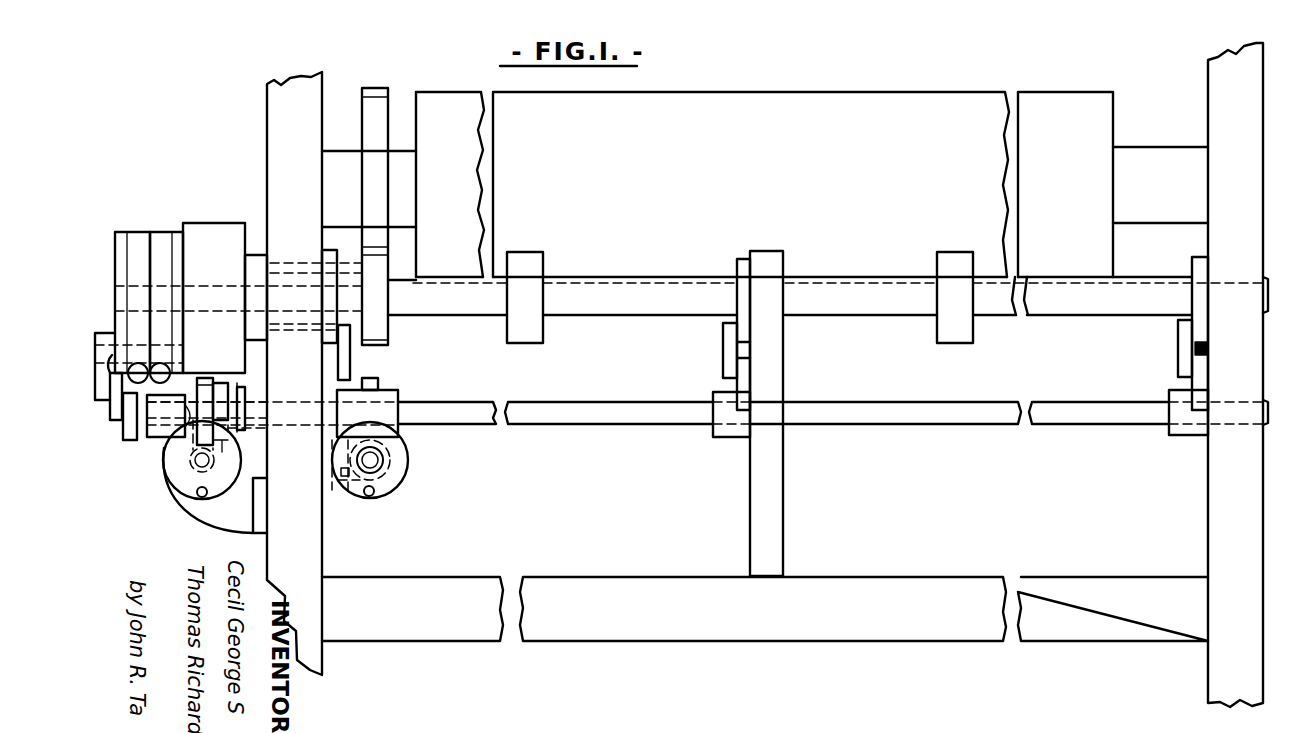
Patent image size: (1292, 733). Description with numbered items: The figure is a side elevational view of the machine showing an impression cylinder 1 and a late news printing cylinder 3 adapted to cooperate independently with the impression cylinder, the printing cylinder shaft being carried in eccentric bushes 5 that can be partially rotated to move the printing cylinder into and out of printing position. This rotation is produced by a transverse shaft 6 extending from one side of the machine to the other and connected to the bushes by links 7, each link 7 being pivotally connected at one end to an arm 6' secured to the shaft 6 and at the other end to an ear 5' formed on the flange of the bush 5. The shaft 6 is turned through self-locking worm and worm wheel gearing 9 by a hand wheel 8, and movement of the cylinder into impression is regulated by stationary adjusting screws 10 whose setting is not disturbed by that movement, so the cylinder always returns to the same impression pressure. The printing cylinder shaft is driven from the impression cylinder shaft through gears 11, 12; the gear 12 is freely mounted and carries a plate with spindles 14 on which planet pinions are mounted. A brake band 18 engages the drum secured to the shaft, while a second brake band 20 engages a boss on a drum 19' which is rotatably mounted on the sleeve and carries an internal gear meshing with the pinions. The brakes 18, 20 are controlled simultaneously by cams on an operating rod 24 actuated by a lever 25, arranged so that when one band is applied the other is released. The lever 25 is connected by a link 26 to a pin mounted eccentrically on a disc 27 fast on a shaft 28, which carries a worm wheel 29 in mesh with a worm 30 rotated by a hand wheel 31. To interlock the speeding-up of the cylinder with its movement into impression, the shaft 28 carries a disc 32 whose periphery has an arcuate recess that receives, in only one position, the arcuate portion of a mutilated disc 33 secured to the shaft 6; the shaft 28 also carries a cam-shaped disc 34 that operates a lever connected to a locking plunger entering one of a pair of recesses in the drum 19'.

The impression cylinder 1 is at (722, 103).
The late news printing cylinder 3 is at (524, 254).
The eccentric bush 5 is at (765, 375).
The ear 5' is at (780, 330).
The transverse shaft 6 is at (707, 401).
The arm 6' is at (790, 348).
The link 7 is at (363, 367).
The hand wheel 8 is at (414, 488).
The worm and worm wheel gearing 9 is at (397, 459).
The adjusting screws 10 is at (342, 478).
The gear 11 is at (399, 132).
The gear 12 is at (401, 266).
The spindles 14 is at (635, 313).
The brake band 18 is at (136, 225).
The drum 19' is at (225, 280).
The second brake band 20 is at (166, 225).
The operating rod 24 is at (171, 346).
The lever 25 is at (98, 403).
The link 26 is at (116, 430).
The disc 27 is at (134, 452).
The shaft 28 is at (178, 402).
The worm wheel 29 is at (227, 386).
The worm 30 is at (190, 471).
The hand wheel 31 is at (230, 504).
The disc 32 is at (231, 455).
The mutilated disc 33 is at (229, 400).
The disc 34 is at (255, 422).